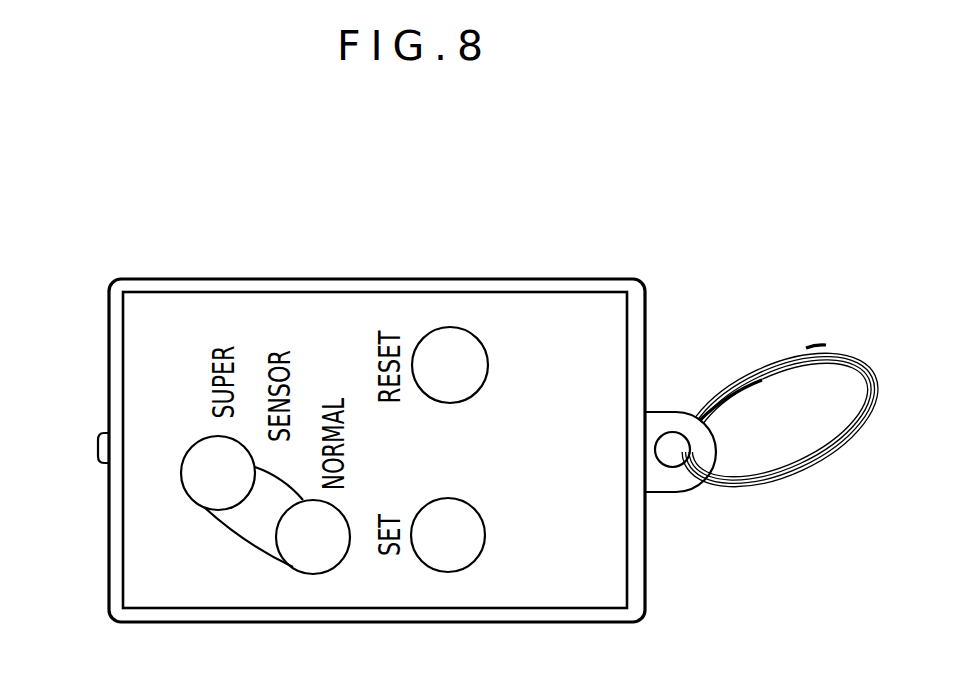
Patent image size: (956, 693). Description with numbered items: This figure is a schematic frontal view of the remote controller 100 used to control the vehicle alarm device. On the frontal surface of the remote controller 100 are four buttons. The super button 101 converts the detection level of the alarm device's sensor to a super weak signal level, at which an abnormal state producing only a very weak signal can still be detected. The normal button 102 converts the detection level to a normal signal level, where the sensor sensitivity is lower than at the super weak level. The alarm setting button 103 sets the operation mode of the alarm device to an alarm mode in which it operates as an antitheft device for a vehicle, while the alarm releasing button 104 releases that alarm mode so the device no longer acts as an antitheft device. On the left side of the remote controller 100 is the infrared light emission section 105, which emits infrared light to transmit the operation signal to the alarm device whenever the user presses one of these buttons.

The remote controller 100 is at (647, 556).
The super button 101 is at (197, 478).
The normal button 102 is at (312, 565).
The alarm setting button 103 is at (450, 567).
The alarm releasing button 104 is at (449, 338).
The infrared light emission section 105 is at (98, 448).